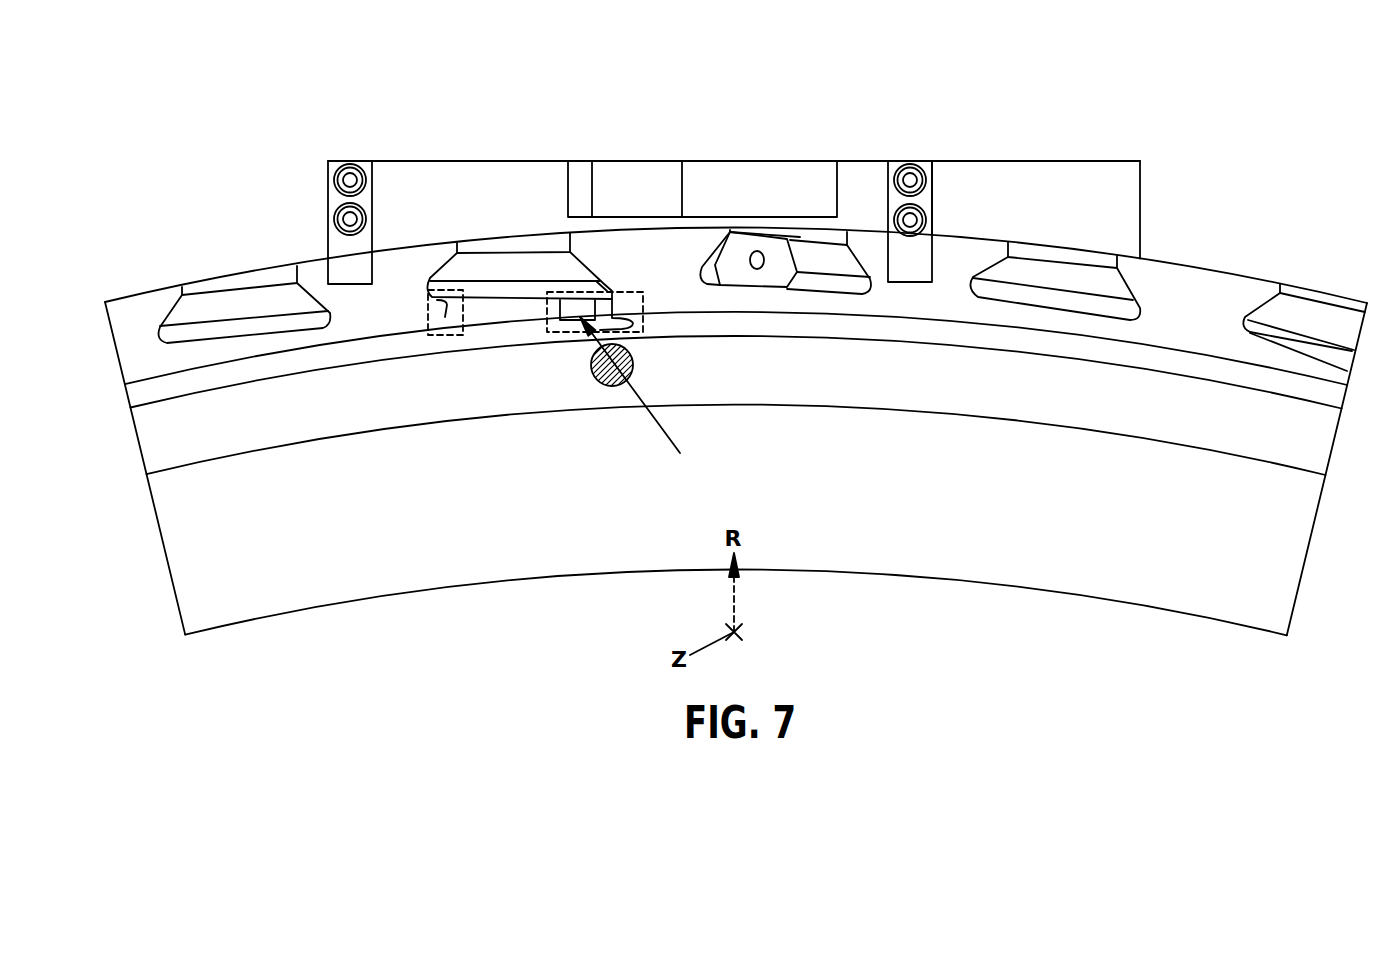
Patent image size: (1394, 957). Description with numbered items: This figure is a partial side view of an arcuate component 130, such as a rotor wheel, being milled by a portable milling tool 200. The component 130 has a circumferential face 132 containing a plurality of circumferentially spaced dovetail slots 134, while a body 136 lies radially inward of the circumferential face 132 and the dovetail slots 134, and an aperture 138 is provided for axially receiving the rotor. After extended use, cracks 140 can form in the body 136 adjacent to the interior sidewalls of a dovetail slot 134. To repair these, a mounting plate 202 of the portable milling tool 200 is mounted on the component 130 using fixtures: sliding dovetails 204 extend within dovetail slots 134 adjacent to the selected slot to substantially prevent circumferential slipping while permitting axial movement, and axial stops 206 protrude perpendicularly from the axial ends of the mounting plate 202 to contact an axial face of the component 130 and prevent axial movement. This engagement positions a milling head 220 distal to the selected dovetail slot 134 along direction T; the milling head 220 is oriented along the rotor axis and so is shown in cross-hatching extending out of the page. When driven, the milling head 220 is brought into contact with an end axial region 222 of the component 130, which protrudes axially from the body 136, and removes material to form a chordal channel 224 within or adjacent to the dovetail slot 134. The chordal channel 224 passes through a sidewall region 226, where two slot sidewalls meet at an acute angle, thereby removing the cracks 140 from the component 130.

The component 130 is at (177, 225).
The circumferential face 132 is at (1205, 265).
The dovetail slots 134 is at (252, 317).
The body 136 is at (166, 514).
The aperture 138 is at (838, 636).
The cracks 140 is at (437, 302).
The portable milling tool 200 is at (734, 170).
The mounting plate 202 is at (452, 160).
The sliding dovetails 204 is at (733, 270).
The axial stops 206 is at (368, 204).
The milling head 220 is at (608, 386).
The end axial region 222 is at (654, 304).
The chordal channel 224 is at (602, 290).
The sidewall region 226 is at (445, 335).